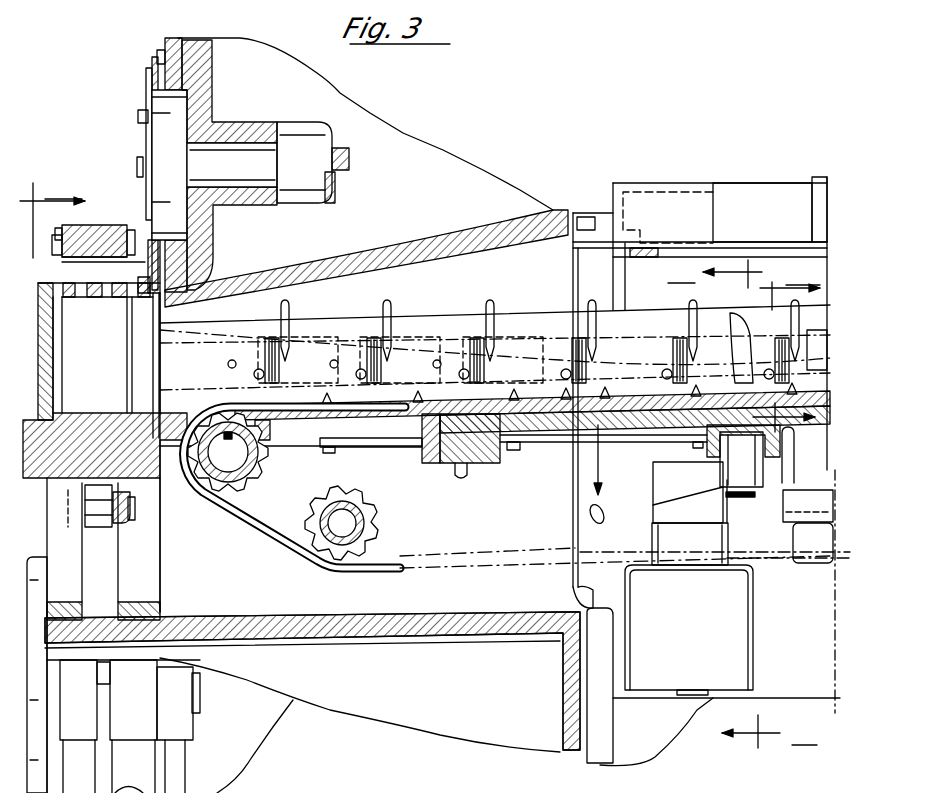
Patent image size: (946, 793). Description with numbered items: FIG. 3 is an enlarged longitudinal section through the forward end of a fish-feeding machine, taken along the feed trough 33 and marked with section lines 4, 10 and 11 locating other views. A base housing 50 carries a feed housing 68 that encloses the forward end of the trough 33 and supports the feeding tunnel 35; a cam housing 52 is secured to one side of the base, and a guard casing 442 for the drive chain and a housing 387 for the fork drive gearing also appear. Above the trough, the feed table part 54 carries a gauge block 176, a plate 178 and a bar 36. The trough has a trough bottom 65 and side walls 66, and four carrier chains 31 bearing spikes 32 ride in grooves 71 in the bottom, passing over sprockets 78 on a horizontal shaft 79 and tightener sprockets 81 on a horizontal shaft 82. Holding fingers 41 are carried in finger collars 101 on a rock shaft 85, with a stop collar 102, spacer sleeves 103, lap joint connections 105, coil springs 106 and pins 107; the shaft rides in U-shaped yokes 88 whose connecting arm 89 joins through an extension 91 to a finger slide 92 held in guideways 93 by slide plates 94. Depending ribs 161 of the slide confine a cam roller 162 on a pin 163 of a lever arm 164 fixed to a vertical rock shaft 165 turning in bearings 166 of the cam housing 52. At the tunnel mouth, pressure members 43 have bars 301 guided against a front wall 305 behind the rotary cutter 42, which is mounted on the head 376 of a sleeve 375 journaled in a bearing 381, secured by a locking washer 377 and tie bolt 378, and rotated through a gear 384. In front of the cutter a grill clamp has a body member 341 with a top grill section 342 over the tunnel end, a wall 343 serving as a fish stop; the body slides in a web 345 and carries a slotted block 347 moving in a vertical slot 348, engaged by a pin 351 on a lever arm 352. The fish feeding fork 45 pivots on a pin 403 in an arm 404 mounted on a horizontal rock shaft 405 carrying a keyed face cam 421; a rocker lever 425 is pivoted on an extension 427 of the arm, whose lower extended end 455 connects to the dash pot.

The front wall 305 is at (176, 40).
The bar 301 is at (158, 56).
The rotary cutter 42 is at (146, 73).
The head 376 is at (175, 107).
The pressure members 43 is at (163, 290).
The sleeve 375 is at (232, 165).
The bearing 381 is at (252, 122).
The gear 384 is at (308, 130).
The tie bolt 378 is at (350, 158).
The locking washer 377 is at (138, 115).
The section line 11 is at (52, 216).
The fish feeding fork 45 is at (99, 225).
The pin 403 is at (56, 234).
The arm 404 is at (119, 528).
The feed housing 68 is at (516, 237).
The wall 343 is at (50, 345).
The body member 341 is at (105, 380).
The top grill section 342 is at (93, 297).
The feeding tunnel 35 is at (114, 366).
The feed trough 33 is at (204, 328).
The rock shaft 85 is at (495, 564).
The side walls 66 is at (328, 325).
The holding fingers 41 is at (494, 318).
The spacer sleeves 103 is at (735, 335).
The lap joint connection 105 is at (663, 349).
The stop collar 102 is at (381, 363).
The finger collar 101 is at (818, 350).
The coil spring 106 is at (559, 389).
The pin 107 is at (635, 378).
The grooves 71 is at (559, 393).
The U-shaped yokes 88 is at (501, 392).
The trough bottom 65 is at (332, 421).
The guideways 93 is at (367, 446).
The slide plates 94 is at (402, 447).
The finger slide 92 is at (538, 435).
The extension 91 is at (440, 463).
The connecting arm 89 is at (466, 476).
The carrier chains 31 is at (258, 520).
The sprockets 78 is at (262, 464).
The horizontal shaft 79 is at (236, 460).
The tightener sprockets 81 is at (362, 510).
The horizontal shaft 82 is at (360, 522).
The spikes 32 is at (232, 404).
The feed table part 54 is at (666, 200).
The gauge block 176 is at (770, 209).
The bar 36 is at (692, 247).
The plate 178 is at (644, 265).
The section line 4 is at (742, 504).
The section line 10 is at (793, 356).
The vertical rock shaft 165 is at (694, 452).
The cam roller 162 is at (743, 456).
The ribs 161 is at (720, 463).
The lever arm 164 is at (672, 490).
The pin 163 is at (750, 498).
The bearings 166 is at (715, 609).
The cam housing 52 is at (720, 712).
The base housing 50 is at (329, 685).
The guard casing 442 is at (274, 734).
The vertical slot 348 is at (78, 568).
The pin 351 is at (98, 528).
The lever arm 352 is at (125, 525).
The slotted block 347 is at (84, 492).
The web 345 is at (158, 587).
The face cam 421 is at (44, 675).
The rocker lever 425 is at (123, 726).
The extension 427 is at (113, 684).
The housing 387 is at (193, 728).
The horizontal rock shaft 405 is at (200, 692).
The lower extended end 455 is at (100, 776).